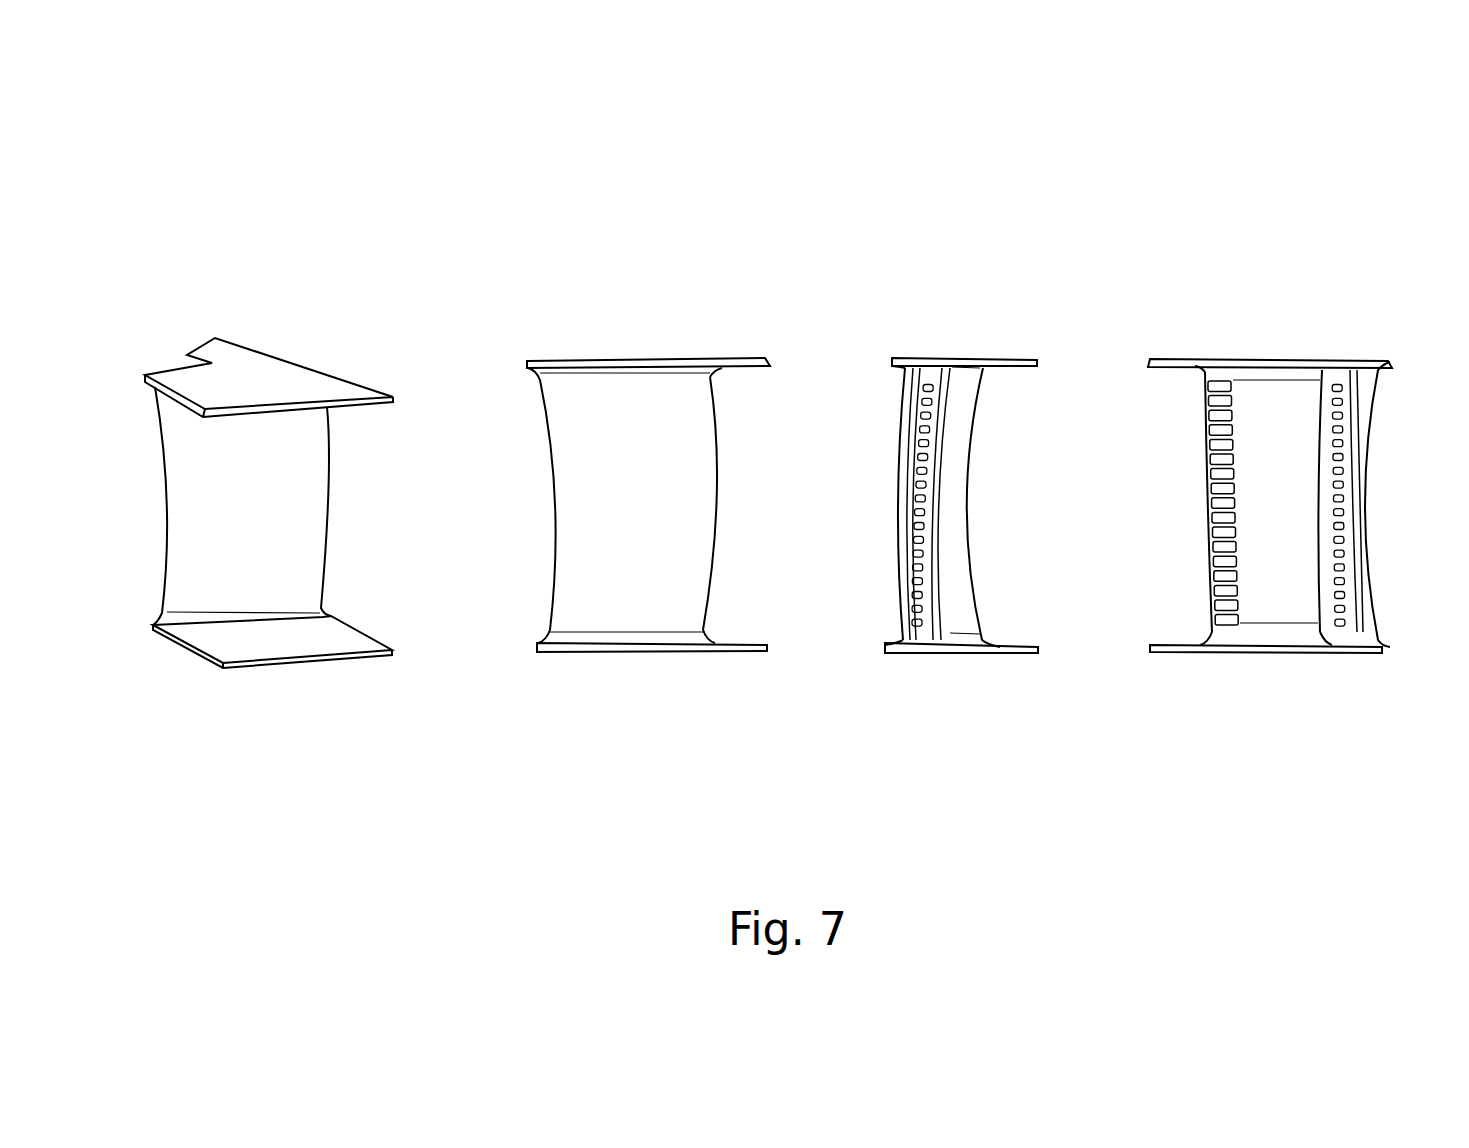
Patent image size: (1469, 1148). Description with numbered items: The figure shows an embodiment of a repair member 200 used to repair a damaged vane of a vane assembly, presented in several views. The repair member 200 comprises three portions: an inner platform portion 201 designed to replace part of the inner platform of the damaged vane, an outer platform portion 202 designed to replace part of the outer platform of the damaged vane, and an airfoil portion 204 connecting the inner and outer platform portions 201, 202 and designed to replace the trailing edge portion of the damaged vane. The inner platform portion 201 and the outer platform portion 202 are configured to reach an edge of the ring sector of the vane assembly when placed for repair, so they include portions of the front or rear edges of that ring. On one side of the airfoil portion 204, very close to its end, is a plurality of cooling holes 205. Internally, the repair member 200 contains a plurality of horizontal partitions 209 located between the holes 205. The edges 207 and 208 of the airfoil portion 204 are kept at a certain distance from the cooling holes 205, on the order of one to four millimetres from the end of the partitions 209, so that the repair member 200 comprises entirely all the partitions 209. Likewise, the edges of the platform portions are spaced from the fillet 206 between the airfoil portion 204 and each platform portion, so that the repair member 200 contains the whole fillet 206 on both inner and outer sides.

The repair member 200 is at (978, 147).
The inner platform portion 201 is at (277, 642).
The outer platform portion 202 is at (277, 373).
The airfoil portion 204 is at (297, 447).
The holes 205 is at (1203, 433).
The fillet 206 is at (203, 620).
The edge 207 is at (542, 513).
The edge 208 is at (910, 362).
The horizontal partitions 209 is at (913, 562).